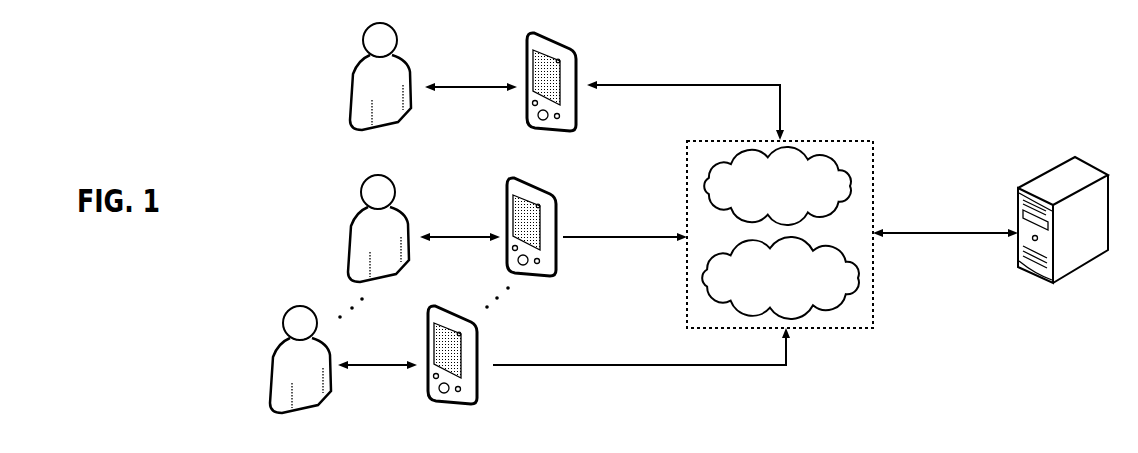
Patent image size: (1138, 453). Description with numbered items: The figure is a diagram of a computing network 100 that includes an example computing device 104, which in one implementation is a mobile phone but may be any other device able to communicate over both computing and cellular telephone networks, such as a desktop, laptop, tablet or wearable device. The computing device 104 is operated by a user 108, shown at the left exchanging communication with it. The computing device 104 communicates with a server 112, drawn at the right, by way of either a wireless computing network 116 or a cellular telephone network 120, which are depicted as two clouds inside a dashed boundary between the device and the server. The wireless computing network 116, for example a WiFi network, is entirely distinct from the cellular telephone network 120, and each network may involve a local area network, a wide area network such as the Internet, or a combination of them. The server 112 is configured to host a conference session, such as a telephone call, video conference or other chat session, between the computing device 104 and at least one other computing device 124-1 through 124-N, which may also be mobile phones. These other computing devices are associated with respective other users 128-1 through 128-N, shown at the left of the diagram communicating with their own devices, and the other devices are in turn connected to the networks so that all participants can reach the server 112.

The computing network 100 is at (928, 55).
The computing device 104 is at (574, 47).
The user 108 is at (353, 80).
The server 112 is at (1052, 168).
The wireless computing network 116 is at (815, 250).
The cellular telephone network 120 is at (743, 215).
The other computing device 124-1 is at (554, 196).
The other computing device 124-N is at (476, 403).
The other user 128-1 is at (352, 232).
The other user 128-N is at (275, 360).